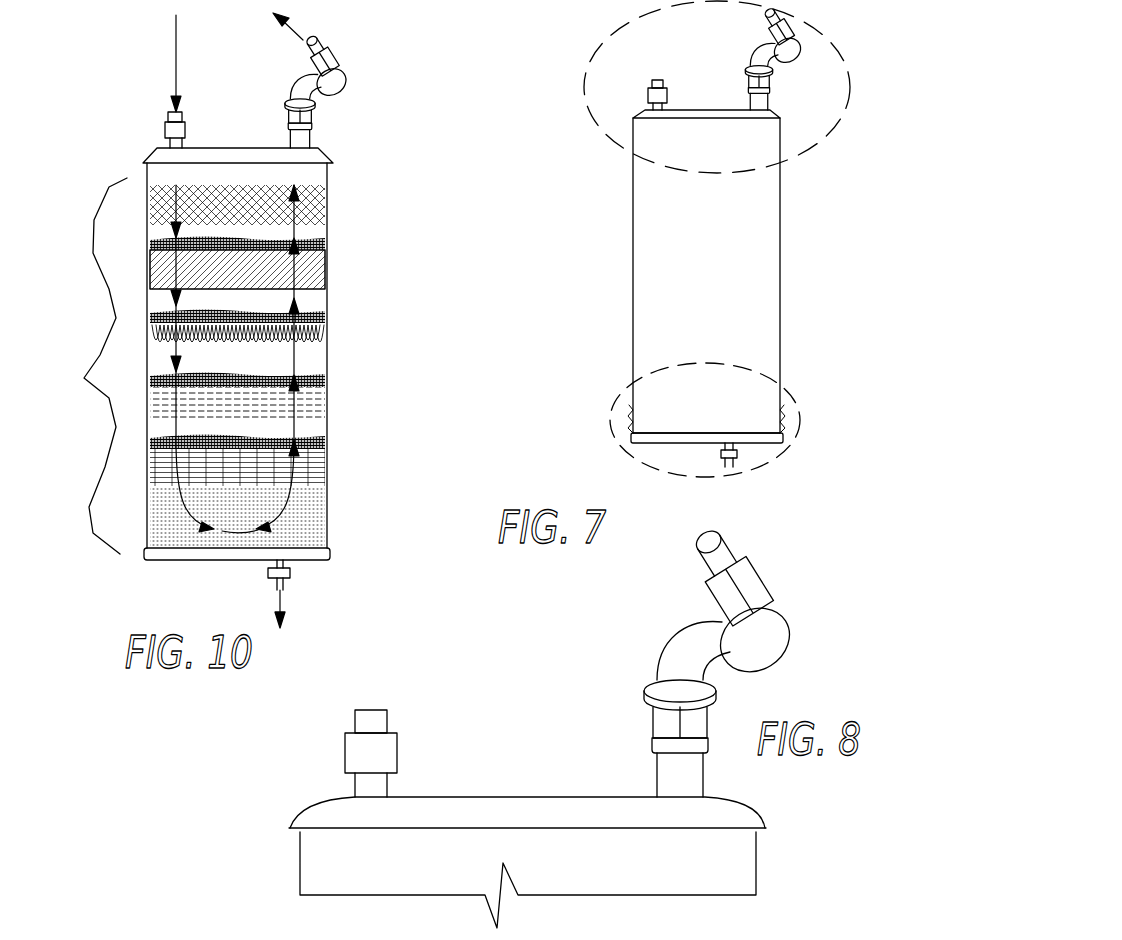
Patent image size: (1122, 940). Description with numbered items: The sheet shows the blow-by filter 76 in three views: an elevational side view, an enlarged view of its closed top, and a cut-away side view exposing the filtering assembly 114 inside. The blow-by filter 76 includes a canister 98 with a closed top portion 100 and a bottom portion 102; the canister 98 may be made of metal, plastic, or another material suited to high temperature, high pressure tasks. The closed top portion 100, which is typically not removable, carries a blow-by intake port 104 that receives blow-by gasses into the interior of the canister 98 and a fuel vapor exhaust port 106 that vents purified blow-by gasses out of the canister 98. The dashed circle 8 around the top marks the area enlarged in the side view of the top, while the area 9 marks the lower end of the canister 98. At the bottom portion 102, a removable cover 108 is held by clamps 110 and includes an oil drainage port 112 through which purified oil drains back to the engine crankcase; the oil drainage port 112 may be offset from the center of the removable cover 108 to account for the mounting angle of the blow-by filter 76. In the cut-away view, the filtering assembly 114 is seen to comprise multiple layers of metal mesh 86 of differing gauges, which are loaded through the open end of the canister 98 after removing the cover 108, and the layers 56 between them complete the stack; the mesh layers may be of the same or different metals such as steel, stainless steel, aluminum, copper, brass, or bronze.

In FIG. 7, the circle 8 (enlarged area of FIG. 7) 8 is at (717, 87).
In FIG. 7, the area 9 (enlarged area of FIG. 7) 9 is at (707, 420).
In FIG. 10, the screen layer 56 is at (313, 248).
In FIG. 10, the blow-by filter 76 is at (104, 180).
In FIG. 7, the blow-by filter 76 is at (877, 228).
In FIG. 10, the layers of metal mesh 86 is at (317, 210).
In FIG. 7, the canister 98 is at (760, 245).
In FIG. 7, the closed top portion 100 is at (780, 111).
In FIG. 8, the closed top portion 100 is at (693, 866).
In FIG. 7, the bottom portion 102 is at (695, 417).
In FIG. 10, the blow-by intake port 104 is at (170, 128).
In FIG. 7, the blow-by intake port 104 is at (652, 95).
In FIG. 8, the blow-by intake port 104 is at (362, 758).
In FIG. 10, the fuel vapor exhaust port 106 is at (341, 83).
In FIG. 7, the fuel vapor exhaust port 106 is at (785, 33).
In FIG. 8, the fuel vapor exhaust port 106 is at (787, 618).
In FIG. 7, the removable cover 108 is at (652, 437).
In FIG. 7, the clamps 110 is at (635, 413).
In FIG. 10, the oil drainage port 112 is at (270, 571).
In FIG. 7, the oil drainage port 112 is at (730, 463).
In FIG. 10, the filtering assembly 114 is at (83, 366).